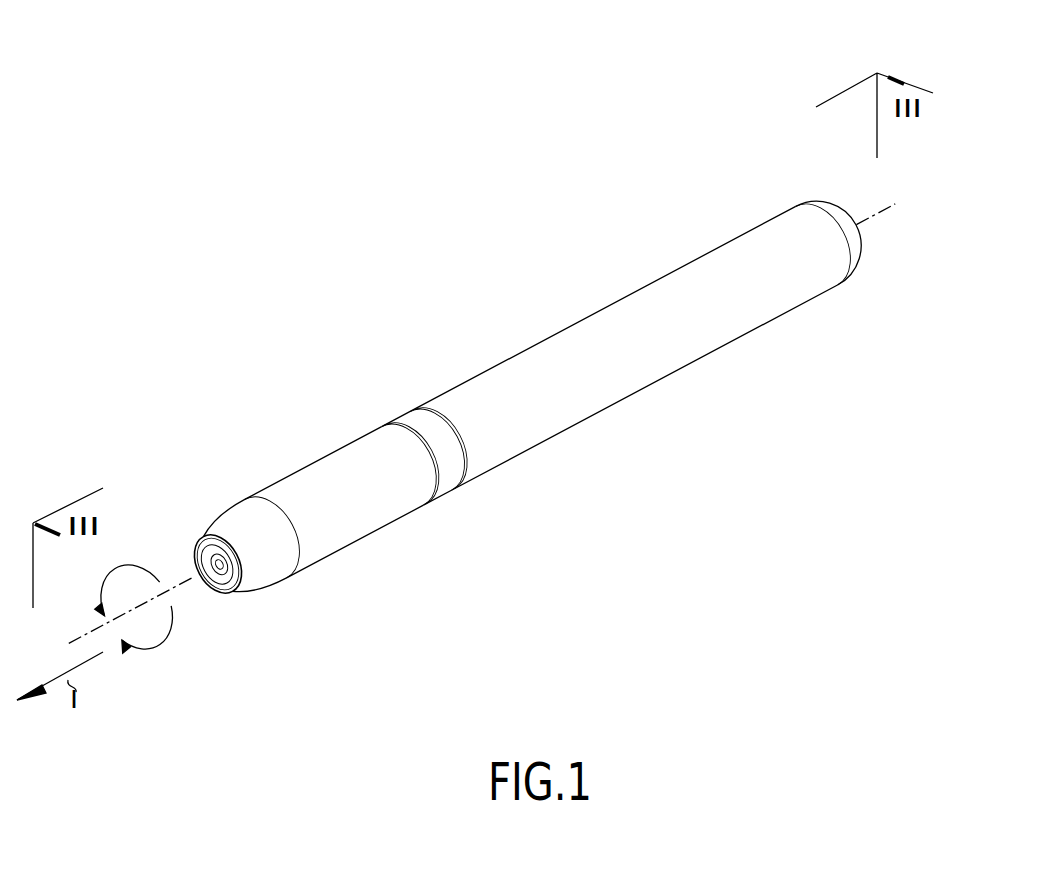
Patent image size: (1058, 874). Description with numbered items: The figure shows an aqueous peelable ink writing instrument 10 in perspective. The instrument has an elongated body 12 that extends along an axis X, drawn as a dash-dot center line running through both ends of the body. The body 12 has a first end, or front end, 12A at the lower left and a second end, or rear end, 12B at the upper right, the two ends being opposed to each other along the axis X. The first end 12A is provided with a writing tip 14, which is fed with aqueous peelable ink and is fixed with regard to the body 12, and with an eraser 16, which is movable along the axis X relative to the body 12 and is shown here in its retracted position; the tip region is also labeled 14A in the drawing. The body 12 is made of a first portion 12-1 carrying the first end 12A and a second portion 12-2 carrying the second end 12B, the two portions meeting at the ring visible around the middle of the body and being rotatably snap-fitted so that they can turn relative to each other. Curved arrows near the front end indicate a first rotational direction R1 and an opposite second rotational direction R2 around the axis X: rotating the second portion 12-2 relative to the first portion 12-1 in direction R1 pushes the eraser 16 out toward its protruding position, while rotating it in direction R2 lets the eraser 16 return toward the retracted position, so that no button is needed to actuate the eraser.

The aqueous peelable ink writing instrument 10 is at (443, 157).
The body 12 is at (522, 457).
The first portion 12-1 is at (317, 480).
The second portion 12-2 is at (641, 307).
The first end 12A is at (200, 540).
The second end 12B is at (827, 202).
The writing tip 14 is at (197, 560).
The tip end 14A is at (200, 588).
The eraser 16 is at (203, 553).
The first rotational direction R1 is at (127, 567).
The second rotational direction R2 is at (170, 647).
The axis X is at (482, 423).